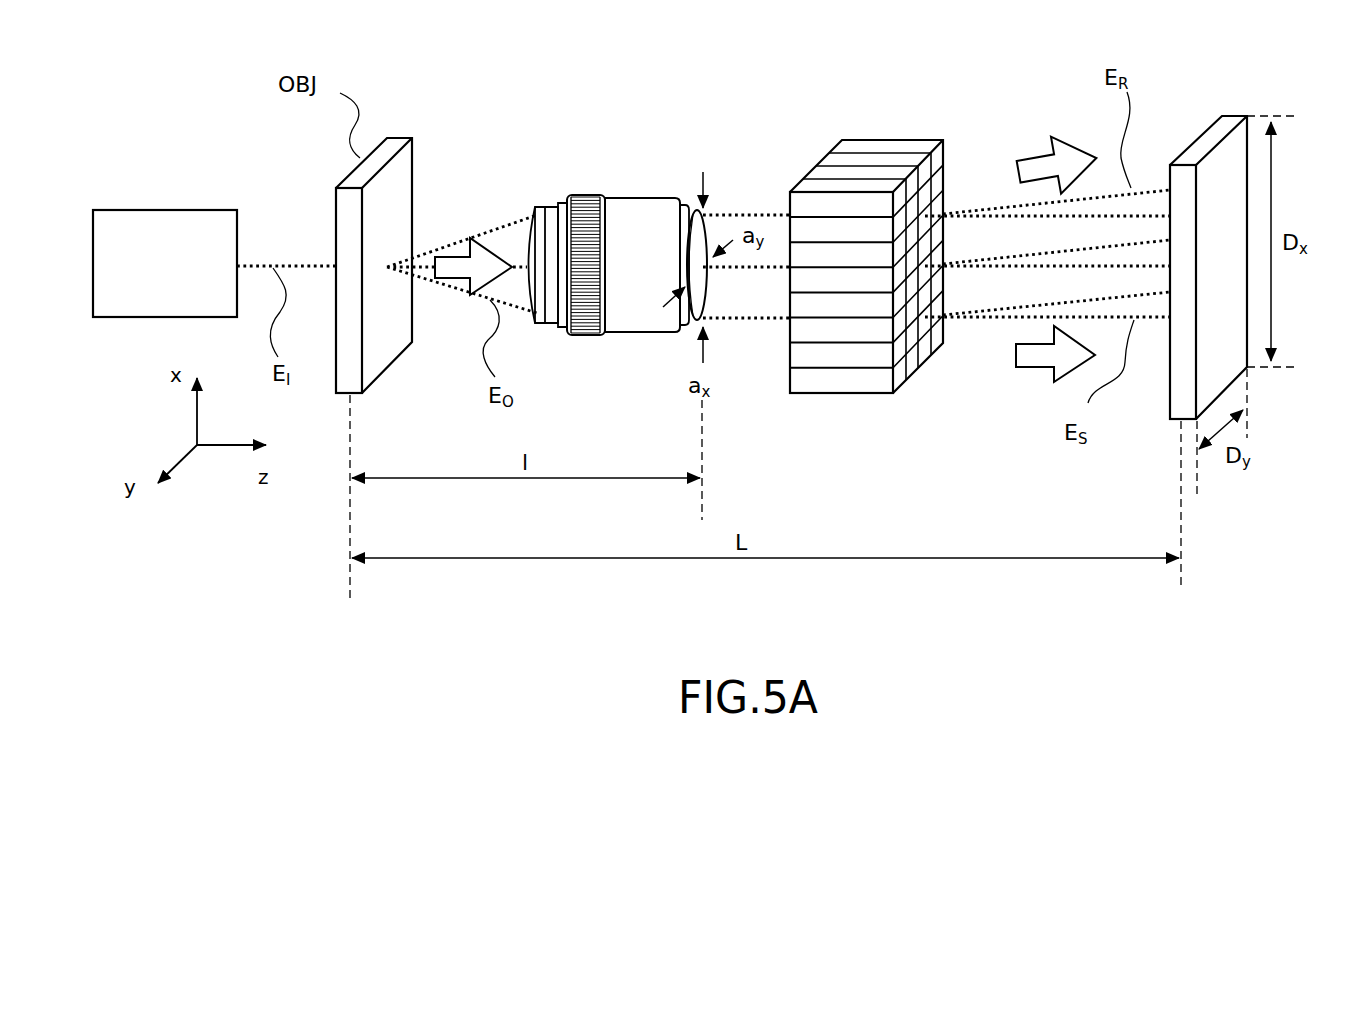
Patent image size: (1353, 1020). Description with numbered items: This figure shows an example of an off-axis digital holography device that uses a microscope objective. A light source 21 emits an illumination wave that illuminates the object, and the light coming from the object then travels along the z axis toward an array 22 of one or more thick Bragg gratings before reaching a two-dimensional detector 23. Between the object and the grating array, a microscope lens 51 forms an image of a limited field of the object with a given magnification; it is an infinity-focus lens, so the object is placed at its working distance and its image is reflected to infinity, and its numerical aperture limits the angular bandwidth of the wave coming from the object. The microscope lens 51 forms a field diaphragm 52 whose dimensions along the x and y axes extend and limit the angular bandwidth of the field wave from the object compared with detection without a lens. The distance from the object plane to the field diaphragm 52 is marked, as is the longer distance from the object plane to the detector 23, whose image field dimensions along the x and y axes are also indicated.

The light source 21 is at (130, 210).
The array of thick Bragg gratings 22 is at (895, 139).
The two-dimensional detector 23 is at (1229, 115).
The microscope lens 51 is at (647, 200).
The field diaphragm 52 is at (699, 175).